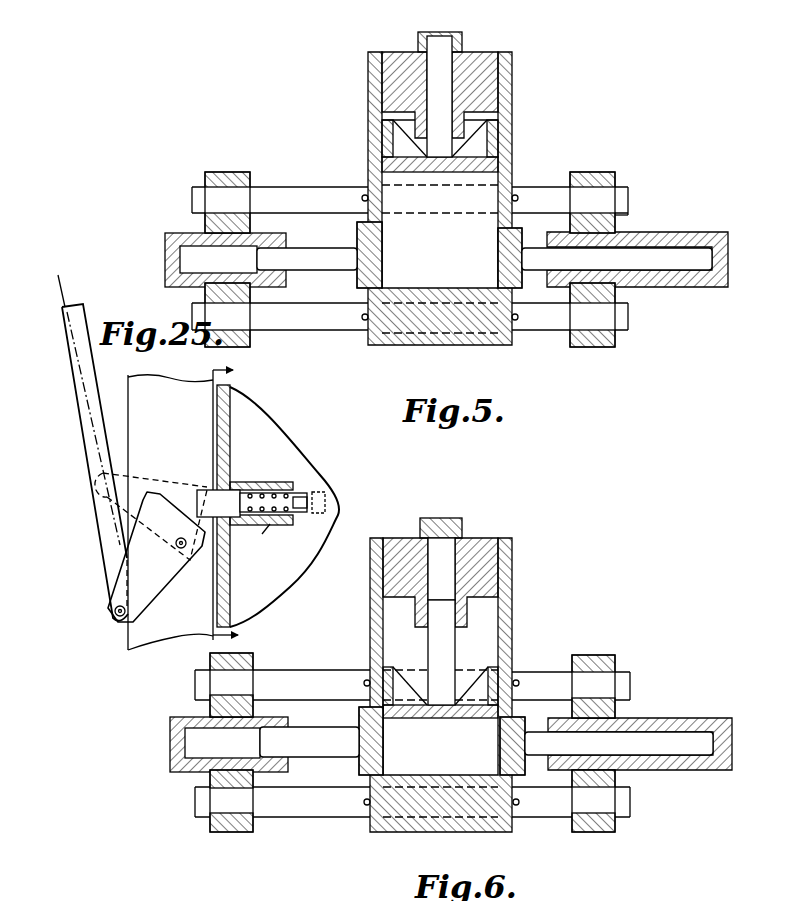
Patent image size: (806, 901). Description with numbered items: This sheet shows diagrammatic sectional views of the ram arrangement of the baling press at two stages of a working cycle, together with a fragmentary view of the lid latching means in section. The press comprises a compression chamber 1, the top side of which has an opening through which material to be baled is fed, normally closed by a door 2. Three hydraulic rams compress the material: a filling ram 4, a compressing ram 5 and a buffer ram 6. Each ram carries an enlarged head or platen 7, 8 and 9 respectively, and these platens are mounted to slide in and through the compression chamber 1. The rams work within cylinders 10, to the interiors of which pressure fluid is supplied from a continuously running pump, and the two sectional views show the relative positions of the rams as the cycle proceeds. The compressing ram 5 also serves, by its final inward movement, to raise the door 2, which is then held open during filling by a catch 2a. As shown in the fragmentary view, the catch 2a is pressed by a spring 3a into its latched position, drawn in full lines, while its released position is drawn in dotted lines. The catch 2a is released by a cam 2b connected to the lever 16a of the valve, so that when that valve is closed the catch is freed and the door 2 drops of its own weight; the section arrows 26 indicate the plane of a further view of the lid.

In FIG. 5, the compression chamber 1 is at (440, 198).
In FIG. 6, the compression chamber 1 is at (441, 685).
In FIG. 5, the filling ram 4 is at (445, 90).
In FIG. 6, the filling ram 4 is at (447, 637).
In FIG. 5, the compressing ram 5 is at (661, 248).
In FIG. 6, the compressing ram 5 is at (681, 735).
In FIG. 5, the buffer ram 6 is at (322, 254).
In FIG. 6, the buffer ram 6 is at (330, 740).
In FIG. 5, the platen 7 is at (480, 165).
In FIG. 6, the platen 7 is at (478, 716).
In FIG. 5, the platen 8 is at (500, 244).
In FIG. 6, the platen 8 is at (502, 748).
In FIG. 5, the platen 9 is at (380, 250).
In FIG. 6, the platen 9 is at (381, 750).
In FIG. 5, the cylinders 10 is at (459, 46).
In FIG. 6, the cylinders 10 is at (462, 533).
In FIG. 25, the door 2 is at (332, 520).
In FIG. 25, the catch 2a is at (229, 501).
In FIG. 25, the cam 2b is at (160, 515).
In FIG. 25, the spring 3a is at (259, 541).
In FIG. 25, the lever 16a is at (88, 420).
In FIG. 25, the section line 26 is at (241, 509).